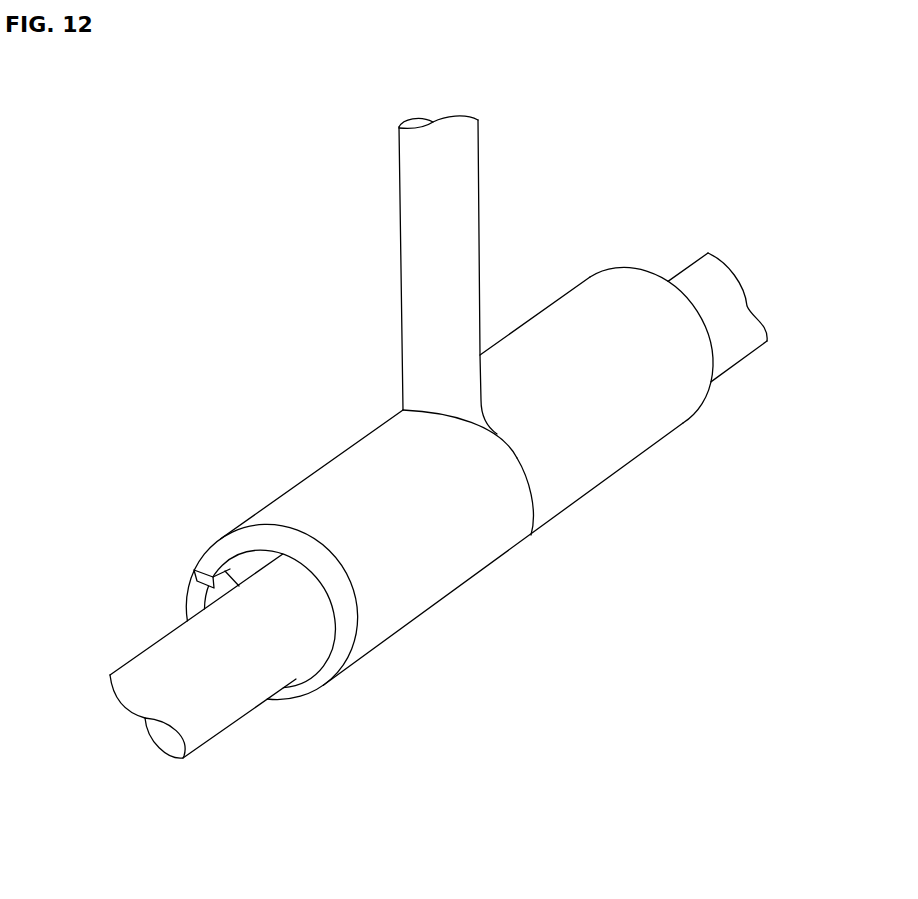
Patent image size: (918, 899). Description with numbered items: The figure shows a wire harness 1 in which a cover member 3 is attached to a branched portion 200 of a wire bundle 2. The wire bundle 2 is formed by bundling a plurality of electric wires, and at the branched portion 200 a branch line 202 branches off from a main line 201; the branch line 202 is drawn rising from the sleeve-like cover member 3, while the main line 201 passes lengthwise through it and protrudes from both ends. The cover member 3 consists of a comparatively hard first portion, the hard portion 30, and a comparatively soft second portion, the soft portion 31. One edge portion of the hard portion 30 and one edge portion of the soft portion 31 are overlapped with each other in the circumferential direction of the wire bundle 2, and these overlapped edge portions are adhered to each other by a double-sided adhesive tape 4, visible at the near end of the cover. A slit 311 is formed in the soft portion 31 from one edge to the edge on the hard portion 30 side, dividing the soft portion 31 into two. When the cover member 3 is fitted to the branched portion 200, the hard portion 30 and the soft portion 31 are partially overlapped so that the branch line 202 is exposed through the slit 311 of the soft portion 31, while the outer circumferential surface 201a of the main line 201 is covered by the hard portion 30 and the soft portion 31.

The wire harness 1 is at (548, 109).
The wire bundle 2 is at (237, 710).
The cover member 3 is at (274, 490).
The double-sided adhesive tape 4 is at (194, 571).
The hard portion 30 is at (294, 696).
The soft portion 31 is at (432, 594).
The slit 311 is at (534, 507).
The branched portion 200 is at (392, 404).
The main line 201 is at (689, 280).
The outer circumferential surface 201a is at (148, 669).
The branch line 202 is at (465, 192).